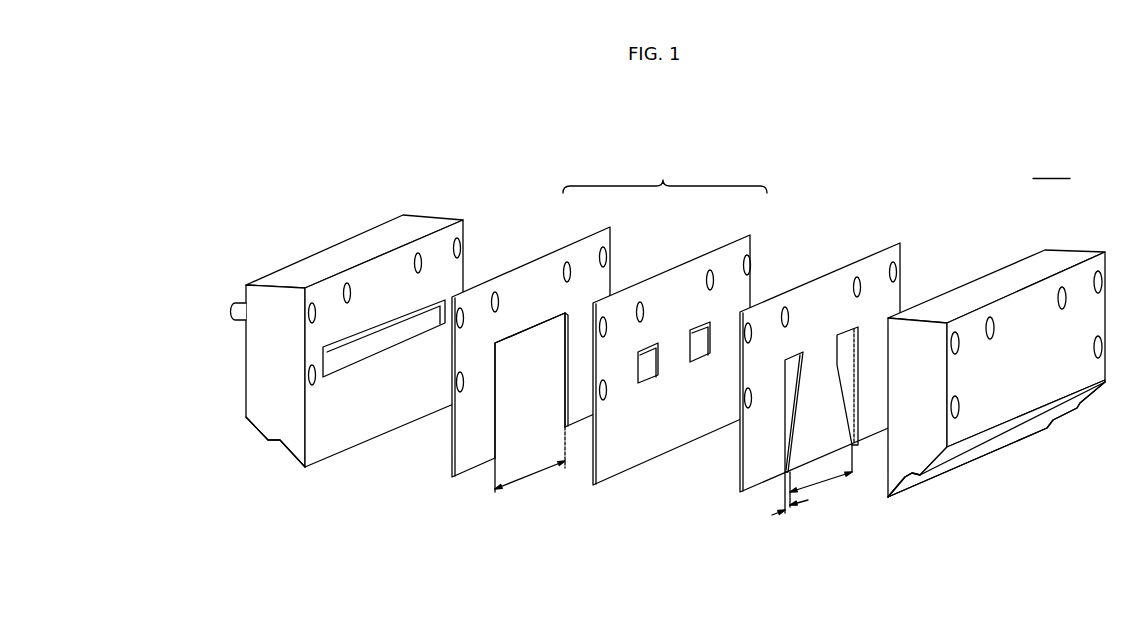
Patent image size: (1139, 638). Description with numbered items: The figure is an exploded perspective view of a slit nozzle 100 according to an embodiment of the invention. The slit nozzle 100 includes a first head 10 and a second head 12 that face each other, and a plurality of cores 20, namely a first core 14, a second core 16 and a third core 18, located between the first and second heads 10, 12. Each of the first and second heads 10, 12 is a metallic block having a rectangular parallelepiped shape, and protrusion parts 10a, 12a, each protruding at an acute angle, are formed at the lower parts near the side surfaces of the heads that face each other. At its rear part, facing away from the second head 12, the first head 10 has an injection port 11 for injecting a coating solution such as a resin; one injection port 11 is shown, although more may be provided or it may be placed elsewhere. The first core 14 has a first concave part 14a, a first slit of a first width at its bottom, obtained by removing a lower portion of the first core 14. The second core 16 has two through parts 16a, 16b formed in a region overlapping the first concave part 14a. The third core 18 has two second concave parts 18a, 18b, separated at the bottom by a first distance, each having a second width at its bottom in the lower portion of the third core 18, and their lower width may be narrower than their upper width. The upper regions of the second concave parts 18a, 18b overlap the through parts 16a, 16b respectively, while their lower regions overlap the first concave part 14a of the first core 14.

The slit nozzle 100 is at (1051, 168).
The first head 10 is at (330, 252).
The protrusion part 10a is at (290, 458).
The injection port 11 is at (234, 302).
The second head 12 is at (992, 278).
The protrusion part 12a is at (898, 485).
The first core 14 is at (533, 262).
The first concave part 14a is at (533, 332).
The second core 16 is at (677, 268).
The through part 16a is at (647, 375).
The through part 16b is at (700, 355).
The third core 18 is at (817, 278).
The second concave part 18a is at (790, 422).
The second concave part 18b is at (848, 395).
The cores 20 is at (665, 176).